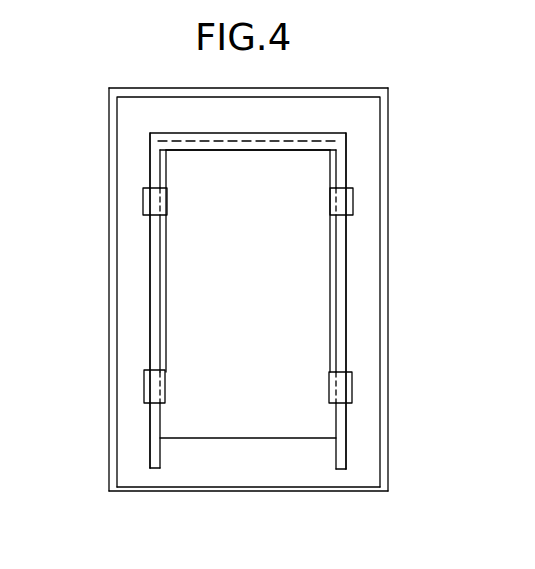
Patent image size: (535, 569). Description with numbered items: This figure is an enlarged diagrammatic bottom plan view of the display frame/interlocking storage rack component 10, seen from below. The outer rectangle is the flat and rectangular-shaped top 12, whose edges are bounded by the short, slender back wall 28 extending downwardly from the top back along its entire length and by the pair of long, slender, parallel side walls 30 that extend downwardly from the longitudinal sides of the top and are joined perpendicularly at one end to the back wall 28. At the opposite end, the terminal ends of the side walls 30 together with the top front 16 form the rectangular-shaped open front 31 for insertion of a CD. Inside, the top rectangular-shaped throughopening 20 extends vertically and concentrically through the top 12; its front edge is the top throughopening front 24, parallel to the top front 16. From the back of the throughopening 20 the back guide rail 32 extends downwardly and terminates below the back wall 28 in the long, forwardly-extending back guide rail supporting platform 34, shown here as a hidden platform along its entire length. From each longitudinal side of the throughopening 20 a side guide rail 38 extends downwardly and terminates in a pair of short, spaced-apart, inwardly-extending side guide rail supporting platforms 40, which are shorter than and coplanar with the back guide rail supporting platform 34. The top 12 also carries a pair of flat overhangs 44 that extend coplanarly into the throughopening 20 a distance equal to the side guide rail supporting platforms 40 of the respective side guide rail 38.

The display frame/interlocking storage rack component 10 is at (86, 131).
The flat and rectangular-shaped top 12 is at (134, 274).
The top front 16 is at (287, 493).
The top rectangular-shaped throughopening 20 is at (260, 255).
The top throughopening front 24 is at (250, 438).
The back wall 28 is at (187, 89).
The side walls 30 is at (109, 392).
The rectangular-shaped open front 31 is at (215, 493).
The back guide rail 32 is at (315, 133).
The back guide rail supporting platform 34 is at (205, 150).
The side guide rails 38 is at (151, 275).
The side guide rail supporting platforms 40 is at (332, 202).
The overhangs 44 is at (166, 328).